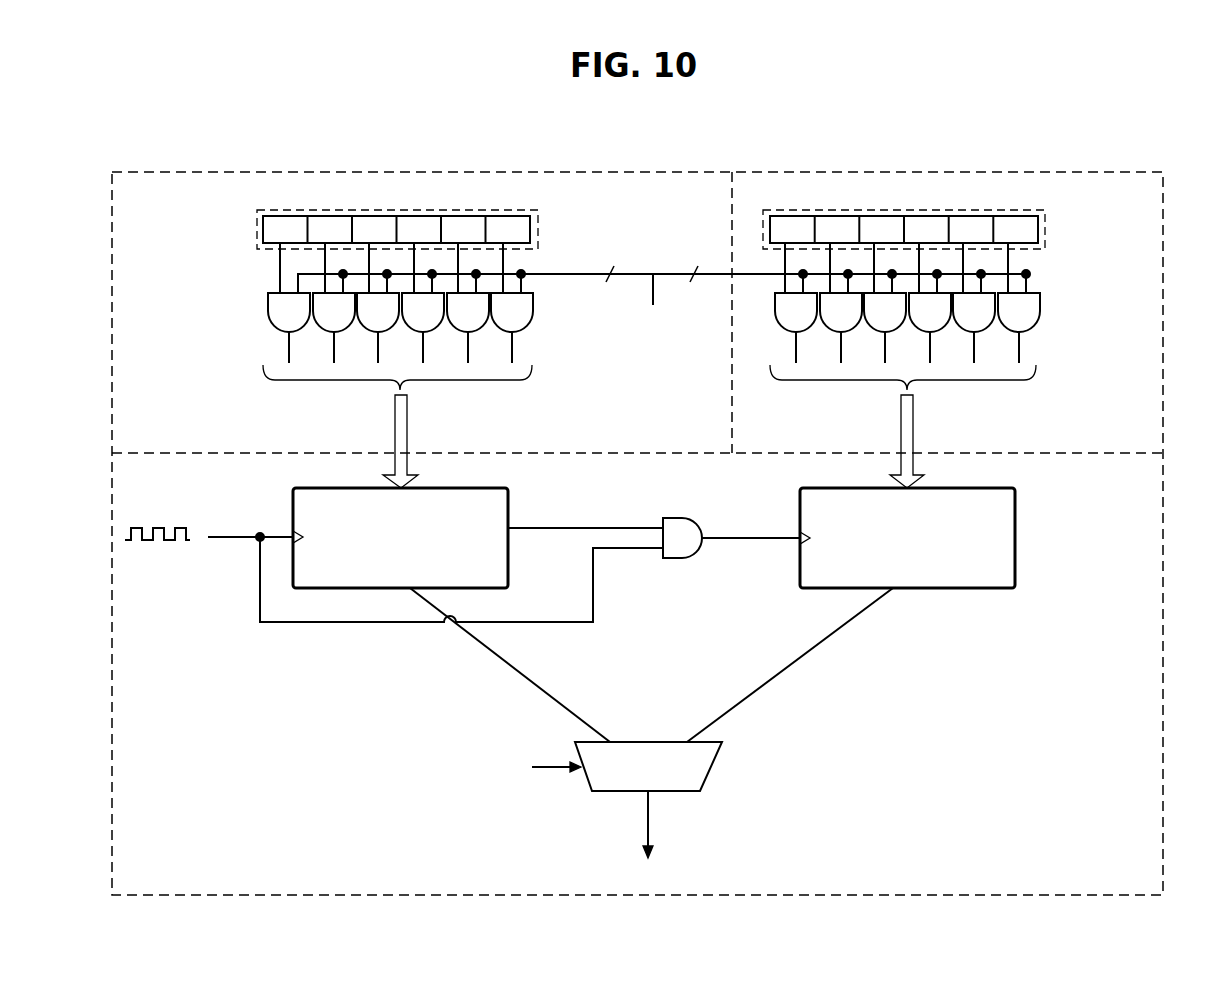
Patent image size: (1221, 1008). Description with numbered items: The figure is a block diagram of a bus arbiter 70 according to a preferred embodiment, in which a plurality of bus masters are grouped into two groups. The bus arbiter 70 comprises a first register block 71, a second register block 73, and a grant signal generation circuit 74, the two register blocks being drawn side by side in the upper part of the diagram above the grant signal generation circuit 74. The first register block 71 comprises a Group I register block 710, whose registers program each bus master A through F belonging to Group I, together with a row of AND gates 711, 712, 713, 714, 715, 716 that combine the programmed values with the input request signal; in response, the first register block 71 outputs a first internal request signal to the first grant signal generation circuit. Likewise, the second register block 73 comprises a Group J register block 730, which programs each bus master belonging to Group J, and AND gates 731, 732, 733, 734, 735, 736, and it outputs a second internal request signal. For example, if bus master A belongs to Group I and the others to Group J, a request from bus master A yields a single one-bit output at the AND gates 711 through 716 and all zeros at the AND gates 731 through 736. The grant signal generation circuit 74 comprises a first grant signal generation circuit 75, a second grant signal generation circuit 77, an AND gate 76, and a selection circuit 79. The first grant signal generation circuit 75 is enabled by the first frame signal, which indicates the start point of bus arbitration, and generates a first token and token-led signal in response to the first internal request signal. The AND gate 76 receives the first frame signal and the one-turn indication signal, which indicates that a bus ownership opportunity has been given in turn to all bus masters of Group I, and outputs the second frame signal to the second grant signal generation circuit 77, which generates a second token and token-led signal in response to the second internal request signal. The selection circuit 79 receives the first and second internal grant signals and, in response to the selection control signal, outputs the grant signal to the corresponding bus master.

The bus arbiter 70 is at (1150, 131).
The first register block 71 is at (420, 172).
The second register block 73 is at (943, 172).
The grant signal generation circuit 74 is at (1163, 650).
The first grant signal generation circuit 75 is at (470, 488).
The AND gate 76 is at (677, 518).
The second grant signal generation circuit 77 is at (977, 488).
The selection circuit 79 is at (717, 768).
The Group I register block 710 is at (472, 208).
The Group J register block 730 is at (978, 208).
The AND gate 711 is at (289, 303).
The AND gate 712 is at (334, 303).
The AND gate 713 is at (378, 303).
The AND gate 714 is at (423, 303).
The AND gate 715 is at (468, 303).
The AND gate 716 is at (512, 303).
The AND gate 731 is at (796, 303).
The AND gate 732 is at (841, 303).
The AND gate 733 is at (885, 303).
The AND gate 734 is at (930, 303).
The AND gate 735 is at (974, 303).
The AND gate 736 is at (1019, 303).